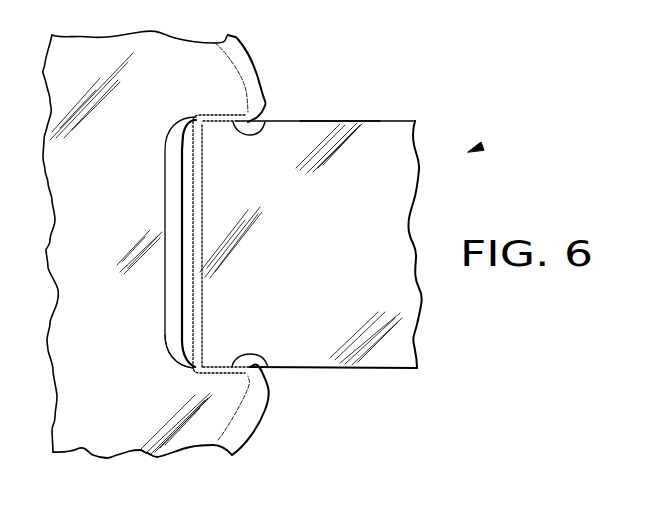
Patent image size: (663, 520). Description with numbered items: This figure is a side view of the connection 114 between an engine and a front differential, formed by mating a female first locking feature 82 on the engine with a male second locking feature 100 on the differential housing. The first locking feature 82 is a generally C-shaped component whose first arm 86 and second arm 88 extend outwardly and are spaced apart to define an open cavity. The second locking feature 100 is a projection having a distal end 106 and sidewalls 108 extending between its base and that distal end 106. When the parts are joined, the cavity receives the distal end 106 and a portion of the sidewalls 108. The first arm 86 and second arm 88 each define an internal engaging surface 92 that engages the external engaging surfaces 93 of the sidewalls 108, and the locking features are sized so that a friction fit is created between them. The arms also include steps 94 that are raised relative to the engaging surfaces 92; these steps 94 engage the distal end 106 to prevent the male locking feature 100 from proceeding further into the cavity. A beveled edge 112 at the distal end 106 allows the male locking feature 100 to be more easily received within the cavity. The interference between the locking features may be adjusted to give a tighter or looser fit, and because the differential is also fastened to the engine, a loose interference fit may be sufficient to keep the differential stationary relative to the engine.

The first locking feature 82 is at (103, 256).
The first arm 86 is at (230, 78).
The second arm 88 is at (228, 408).
The internal engaging surface 92 is at (268, 121).
The external engaging surface 93 is at (268, 370).
The step 94 is at (192, 125).
The second locking feature 100 is at (397, 134).
The distal end 106 is at (203, 197).
The sidewall 108 is at (338, 121).
The beveled edge 112 is at (192, 370).
The connection 114 is at (470, 151).